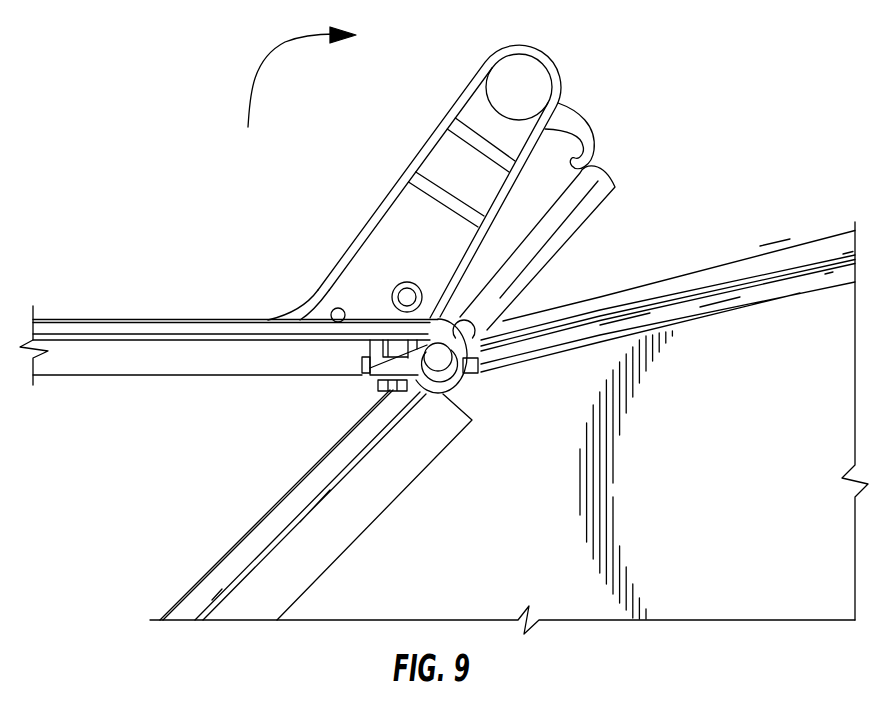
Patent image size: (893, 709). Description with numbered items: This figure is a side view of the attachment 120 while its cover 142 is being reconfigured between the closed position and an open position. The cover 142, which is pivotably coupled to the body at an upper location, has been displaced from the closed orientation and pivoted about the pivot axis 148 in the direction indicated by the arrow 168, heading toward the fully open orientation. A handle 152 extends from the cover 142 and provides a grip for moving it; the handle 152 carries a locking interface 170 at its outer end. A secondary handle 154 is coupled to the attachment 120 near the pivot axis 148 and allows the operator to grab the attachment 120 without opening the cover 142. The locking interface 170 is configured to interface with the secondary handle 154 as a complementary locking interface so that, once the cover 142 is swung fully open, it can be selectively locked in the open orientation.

The attachment 120 is at (712, 308).
The cover 142 is at (148, 330).
The pivot axis 148 is at (438, 357).
The handle 152 is at (450, 158).
The secondary handle 154 is at (612, 182).
The arrow 168 is at (248, 82).
The locking interface 170 is at (572, 125).